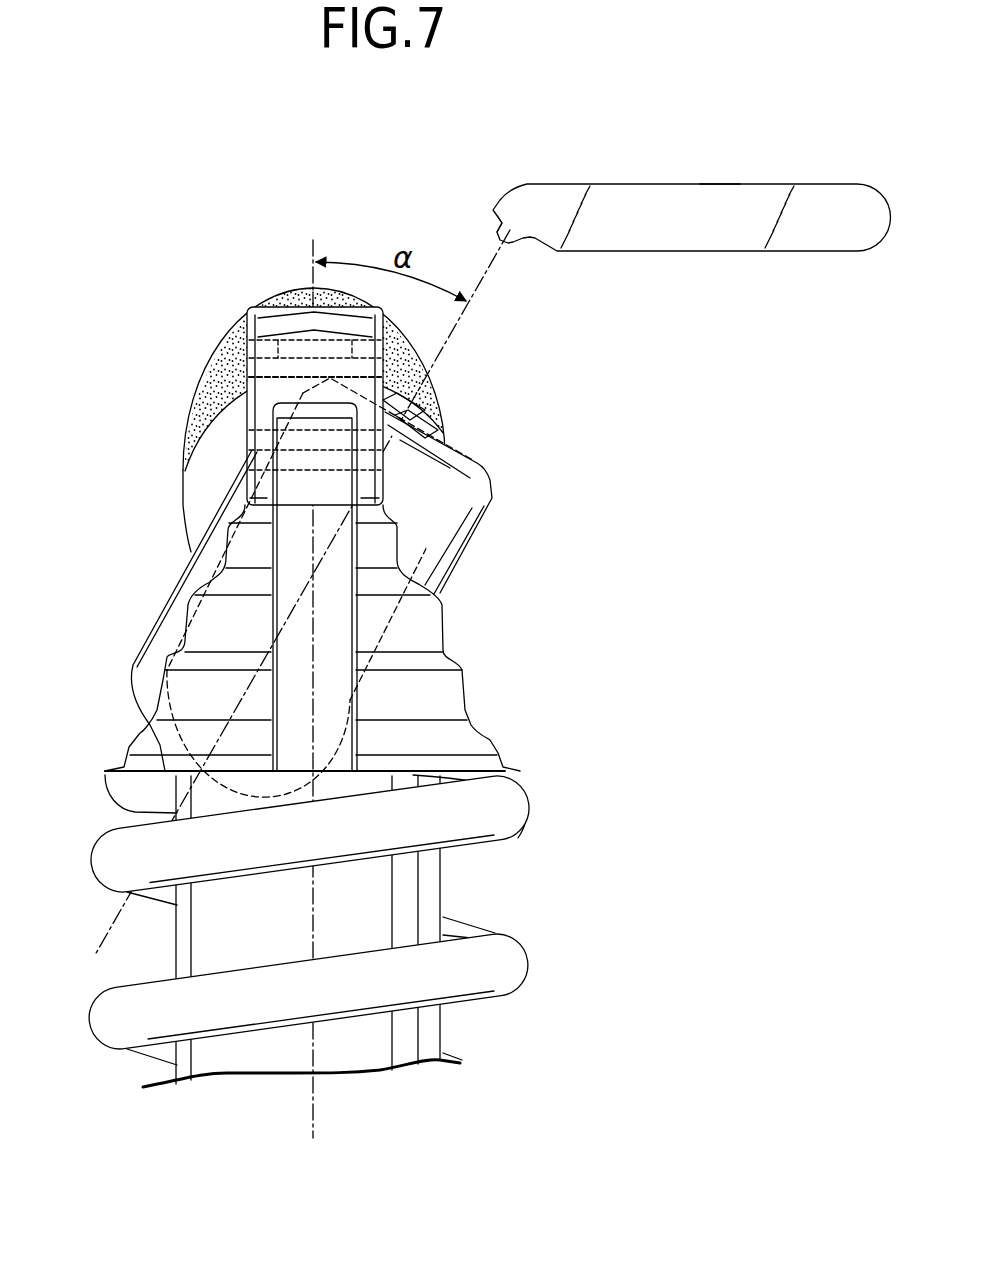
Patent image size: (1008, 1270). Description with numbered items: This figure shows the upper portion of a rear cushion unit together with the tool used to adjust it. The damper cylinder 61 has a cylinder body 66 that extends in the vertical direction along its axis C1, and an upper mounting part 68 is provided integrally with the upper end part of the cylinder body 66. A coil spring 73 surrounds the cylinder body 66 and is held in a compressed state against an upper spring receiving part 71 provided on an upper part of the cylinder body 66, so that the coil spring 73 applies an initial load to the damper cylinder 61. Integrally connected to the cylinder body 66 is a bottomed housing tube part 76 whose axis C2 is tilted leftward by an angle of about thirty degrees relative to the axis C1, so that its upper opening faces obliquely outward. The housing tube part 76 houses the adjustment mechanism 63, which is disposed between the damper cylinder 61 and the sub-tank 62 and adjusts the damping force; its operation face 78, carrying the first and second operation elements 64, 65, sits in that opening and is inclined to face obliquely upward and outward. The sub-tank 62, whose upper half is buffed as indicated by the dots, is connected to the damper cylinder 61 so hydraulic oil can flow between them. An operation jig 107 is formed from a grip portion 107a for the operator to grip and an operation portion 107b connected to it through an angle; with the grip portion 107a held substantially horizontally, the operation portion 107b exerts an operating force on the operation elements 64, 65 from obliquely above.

The damper cylinder 61 is at (452, 890).
The sub-tank 62 is at (210, 388).
The adjustment mechanism 63 is at (480, 483).
The first operation element 64 is at (443, 400).
The second operation element 65 is at (443, 400).
The cylinder body 66 is at (186, 938).
The upper mounting part 68 is at (278, 320).
The upper spring receiving part 71 is at (473, 807).
The coil spring 73 is at (485, 962).
The housing tube part 76 is at (183, 590).
The operation face 78 is at (450, 447).
The operation jig 107 is at (736, 386).
The grip portion 107a is at (718, 237).
The operation portion 107b is at (513, 247).
The axis of the damper cylinder C1 is at (311, 903).
The axis of the housing tube part C2 is at (237, 704).